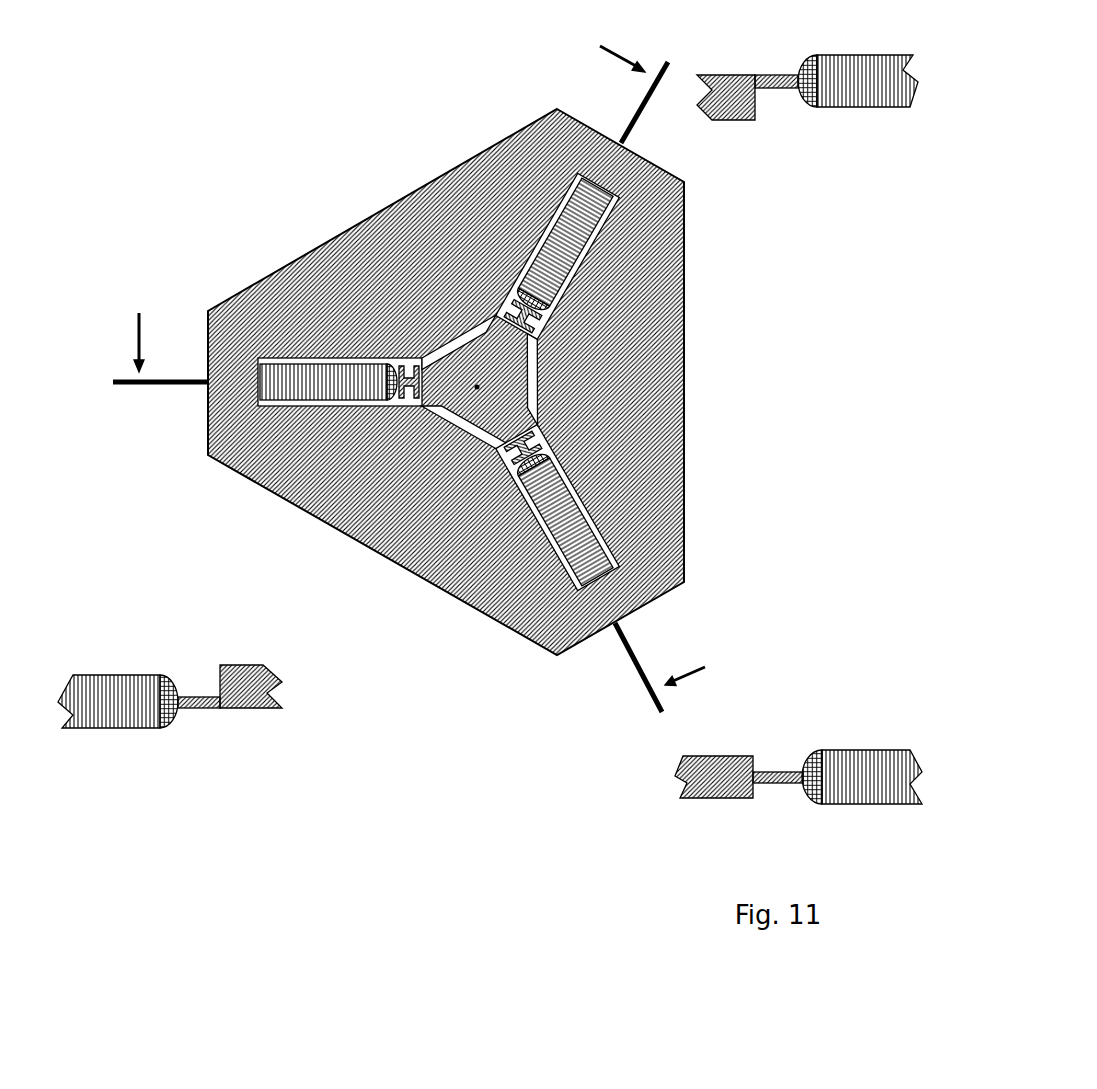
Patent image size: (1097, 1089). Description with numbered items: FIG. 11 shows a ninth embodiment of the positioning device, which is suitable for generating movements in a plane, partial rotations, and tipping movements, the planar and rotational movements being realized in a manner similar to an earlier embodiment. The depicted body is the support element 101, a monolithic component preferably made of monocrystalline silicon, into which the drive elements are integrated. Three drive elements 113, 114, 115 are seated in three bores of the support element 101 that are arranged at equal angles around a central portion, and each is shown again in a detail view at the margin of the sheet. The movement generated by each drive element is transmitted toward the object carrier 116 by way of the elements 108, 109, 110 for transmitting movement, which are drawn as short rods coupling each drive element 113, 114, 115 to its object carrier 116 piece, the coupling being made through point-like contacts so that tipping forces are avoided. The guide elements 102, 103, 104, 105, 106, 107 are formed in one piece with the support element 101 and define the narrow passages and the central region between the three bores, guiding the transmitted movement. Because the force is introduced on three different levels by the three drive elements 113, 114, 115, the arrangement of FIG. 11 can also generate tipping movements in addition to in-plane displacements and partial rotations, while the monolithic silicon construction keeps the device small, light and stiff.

The support element 101 is at (551, 143).
The guide element 102 is at (494, 316).
The guide element 103 is at (540, 336).
The guide element 104 is at (543, 426).
The guide element 105 is at (496, 449).
The guide element 106 is at (477, 387).
The guide element 107 is at (420, 358).
The element for transmitting movement 108 is at (775, 82).
The element for transmitting movement 109 is at (527, 453).
The element for transmitting movement 110 is at (202, 702).
The drive element 113 is at (569, 243).
The drive element 114 is at (887, 767).
The drive element 115 is at (115, 697).
The object carrier 116 is at (243, 682).